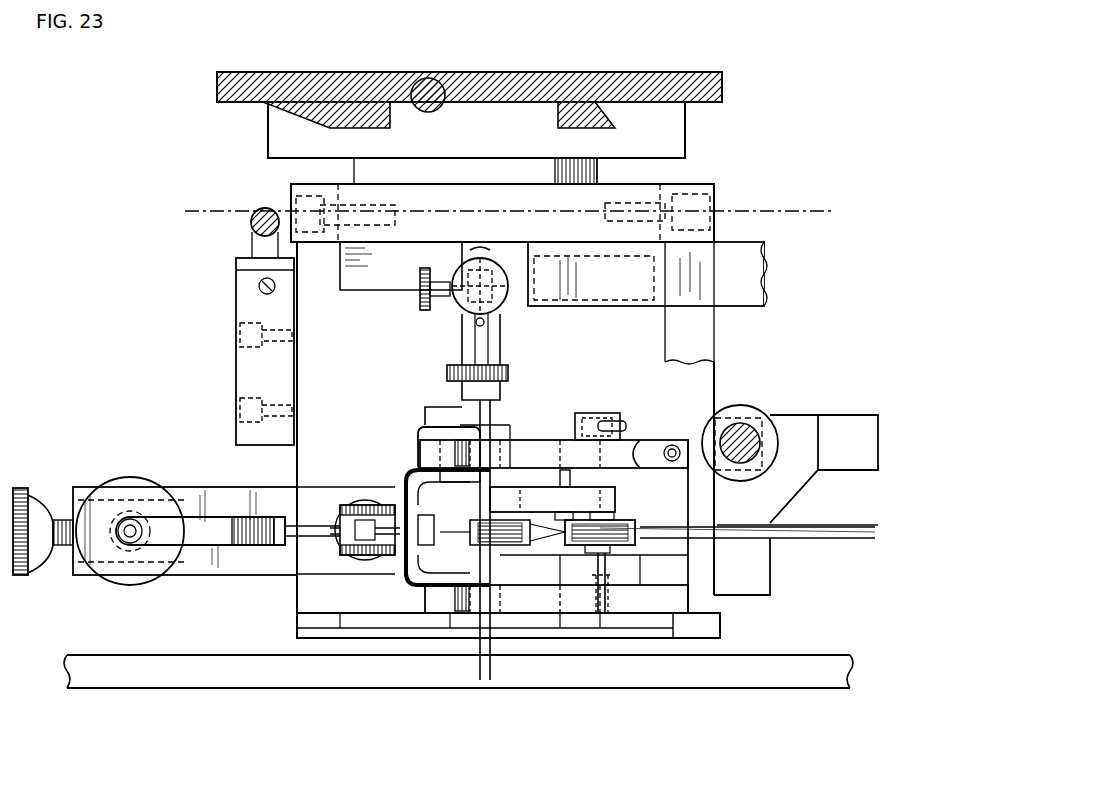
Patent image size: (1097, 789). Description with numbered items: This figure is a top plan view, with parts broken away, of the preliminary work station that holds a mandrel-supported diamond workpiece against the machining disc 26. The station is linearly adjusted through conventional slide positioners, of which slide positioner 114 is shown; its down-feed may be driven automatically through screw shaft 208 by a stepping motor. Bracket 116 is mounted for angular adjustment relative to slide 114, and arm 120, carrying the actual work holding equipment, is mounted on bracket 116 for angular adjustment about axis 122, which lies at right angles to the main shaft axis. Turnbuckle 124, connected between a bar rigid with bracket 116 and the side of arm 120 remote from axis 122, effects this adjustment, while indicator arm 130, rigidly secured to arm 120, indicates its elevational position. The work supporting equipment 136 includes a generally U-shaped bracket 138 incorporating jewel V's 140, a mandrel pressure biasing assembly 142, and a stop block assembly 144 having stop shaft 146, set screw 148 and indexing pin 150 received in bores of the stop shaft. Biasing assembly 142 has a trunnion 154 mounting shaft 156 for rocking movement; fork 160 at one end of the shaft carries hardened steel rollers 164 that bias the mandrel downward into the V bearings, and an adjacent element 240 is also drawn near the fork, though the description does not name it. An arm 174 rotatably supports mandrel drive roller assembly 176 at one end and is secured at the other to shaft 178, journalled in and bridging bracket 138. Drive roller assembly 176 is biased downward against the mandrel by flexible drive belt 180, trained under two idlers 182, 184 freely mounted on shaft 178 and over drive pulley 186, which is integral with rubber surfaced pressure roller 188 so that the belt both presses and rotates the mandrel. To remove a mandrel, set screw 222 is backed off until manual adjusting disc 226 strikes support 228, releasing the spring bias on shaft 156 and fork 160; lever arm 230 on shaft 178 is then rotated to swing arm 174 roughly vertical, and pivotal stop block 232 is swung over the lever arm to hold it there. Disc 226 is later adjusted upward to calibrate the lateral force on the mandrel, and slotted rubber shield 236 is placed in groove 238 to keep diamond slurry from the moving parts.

The disc 26 is at (368, 688).
The Z slide positioner 114 is at (668, 134).
The bracket 116 is at (596, 240).
The arm 120 is at (378, 397).
The axis 122 is at (772, 212).
The turnbuckle 124 is at (748, 412).
The indicator arm 130 is at (256, 212).
The work supporting equipment 136 is at (514, 420).
The U-shaped bracket 138 is at (578, 579).
The jewel V's 140 is at (500, 452).
The mandrel pressure biasing assembly 142 is at (288, 588).
The stop block assembly 144 is at (524, 334).
The stop shaft 146 is at (470, 346).
The set screw 148 is at (416, 280).
The indexing pin 150 is at (508, 246).
The trunnion 154 is at (362, 557).
The shaft 156 is at (305, 524).
The fork 160 is at (410, 578).
The hardened steel rollers 164 is at (464, 462).
The arm 174 is at (568, 508).
The mandrel drive roller assembly 176 is at (464, 520).
The shaft 178 is at (612, 584).
The flexible drive belt 180 is at (808, 521).
The idler 182 is at (620, 520).
The idler 184 is at (618, 545).
The drive pulley 186 is at (473, 544).
The pressure roller 188 is at (543, 513).
The screw shaft 208 is at (432, 80).
The set screw 222 is at (32, 484).
The manual adjusting disc 226 is at (134, 480).
The support 228 is at (220, 476).
The lever arm 230 is at (616, 418).
The pivotal stop block 232 is at (646, 442).
The slotted rubber shield 236 is at (584, 638).
The groove 238 is at (297, 628).
The retainer bracket 240 is at (416, 434).